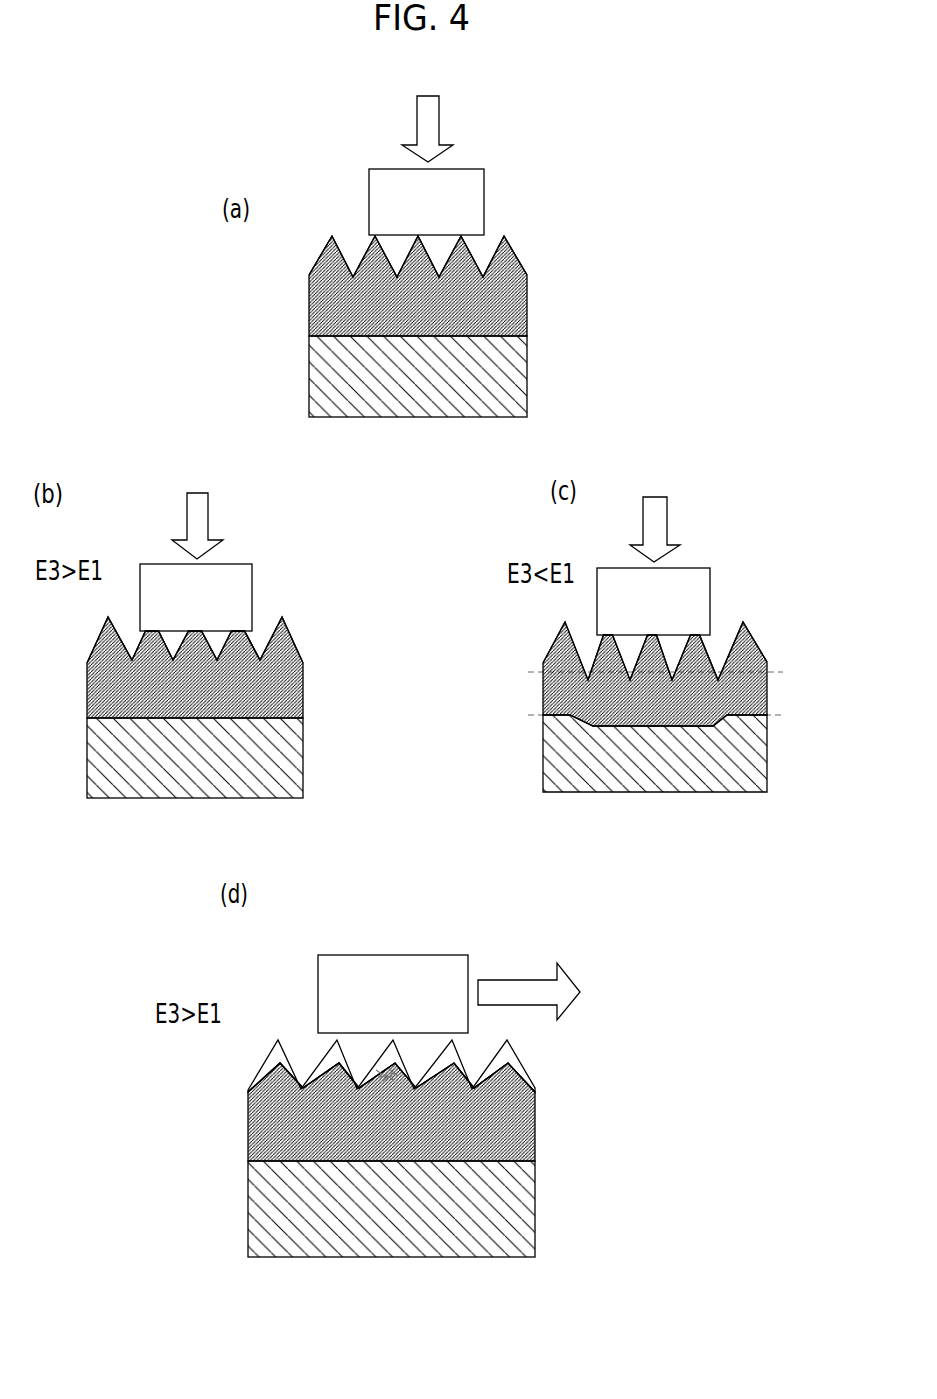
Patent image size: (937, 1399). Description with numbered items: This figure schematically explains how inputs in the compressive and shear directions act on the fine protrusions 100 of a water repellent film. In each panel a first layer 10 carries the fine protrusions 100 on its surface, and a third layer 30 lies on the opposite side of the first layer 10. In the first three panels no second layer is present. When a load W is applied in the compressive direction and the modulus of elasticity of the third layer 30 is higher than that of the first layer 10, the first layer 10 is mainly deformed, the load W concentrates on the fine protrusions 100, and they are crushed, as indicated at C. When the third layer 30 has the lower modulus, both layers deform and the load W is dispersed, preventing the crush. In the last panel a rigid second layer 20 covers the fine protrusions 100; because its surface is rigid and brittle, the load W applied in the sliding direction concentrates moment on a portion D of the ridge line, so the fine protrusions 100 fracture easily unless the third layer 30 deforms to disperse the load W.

The load W is at (477, 195).
The first layer 10 is at (508, 310).
The fine protrusions 100 is at (507, 253).
The third layer 30 is at (513, 380).
The crushed portion of fine protrusions C is at (240, 648).
The second layer 20 is at (522, 1052).
The portion of ridge line of fine protrusions D is at (382, 1073).